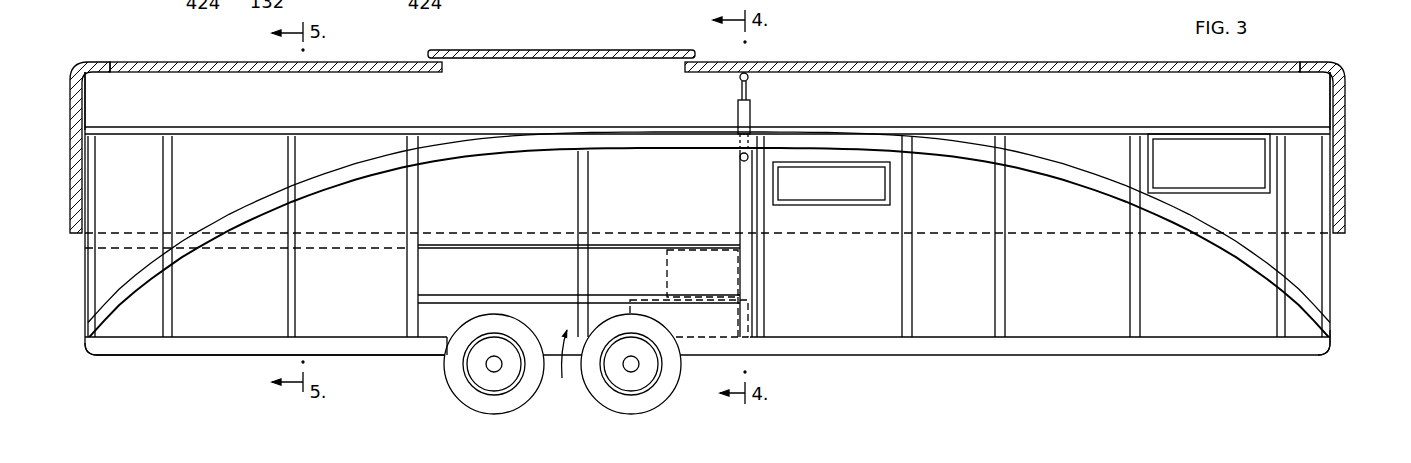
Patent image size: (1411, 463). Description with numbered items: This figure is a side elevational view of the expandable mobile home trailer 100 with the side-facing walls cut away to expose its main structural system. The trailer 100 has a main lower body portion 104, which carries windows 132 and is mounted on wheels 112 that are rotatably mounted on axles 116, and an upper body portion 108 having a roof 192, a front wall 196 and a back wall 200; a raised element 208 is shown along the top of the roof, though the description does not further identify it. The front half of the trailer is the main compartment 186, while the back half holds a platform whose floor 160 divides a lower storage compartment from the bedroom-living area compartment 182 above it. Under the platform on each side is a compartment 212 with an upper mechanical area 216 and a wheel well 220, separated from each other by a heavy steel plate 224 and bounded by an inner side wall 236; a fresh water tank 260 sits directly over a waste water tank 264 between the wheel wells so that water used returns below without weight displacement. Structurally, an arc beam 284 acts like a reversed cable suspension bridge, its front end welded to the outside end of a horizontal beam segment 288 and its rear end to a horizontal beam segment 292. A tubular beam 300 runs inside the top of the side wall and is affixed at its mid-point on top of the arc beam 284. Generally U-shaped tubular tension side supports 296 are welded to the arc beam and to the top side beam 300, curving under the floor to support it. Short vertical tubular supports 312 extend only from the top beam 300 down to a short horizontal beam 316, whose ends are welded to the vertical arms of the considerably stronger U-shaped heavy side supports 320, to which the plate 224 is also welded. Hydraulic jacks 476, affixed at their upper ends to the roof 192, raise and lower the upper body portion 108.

The trailer 100 is at (845, 46).
The main body portion 104 is at (1340, 322).
The upper body portion 108 is at (940, 58).
The wheels 112 is at (462, 386).
The axles 116 is at (488, 366).
The windows 132 is at (843, 175).
The floor 160 is at (125, 248).
The bedroom-living area compartment 182 is at (148, 92).
The main compartment 186 is at (1114, 85).
The roof 192 is at (405, 63).
The front wall 196 is at (1347, 78).
The back wall 200 is at (71, 100).
The roof hatch cover 208 is at (616, 50).
The compartment 212 is at (500, 262).
The upper mechanical area 216 is at (604, 262).
The wheel well 220 is at (557, 369).
The heavy plate 224 is at (579, 271).
The inner side wall 236 is at (437, 338).
The fresh water tank 260 is at (750, 266).
The waste water tank 264 is at (750, 325).
The arc beam 284 is at (1020, 163).
The horizontal beam segment 288 is at (1100, 350).
The horizontal beam segment 292 is at (200, 350).
The side supports 296 is at (96, 192).
The tubular beams 300 is at (388, 126).
The vertical tubular supports 312 is at (580, 180).
The short horizontal beam 316 is at (652, 246).
The heavy side supports 320 is at (412, 268).
The hydraulic jacks 476 is at (752, 120).